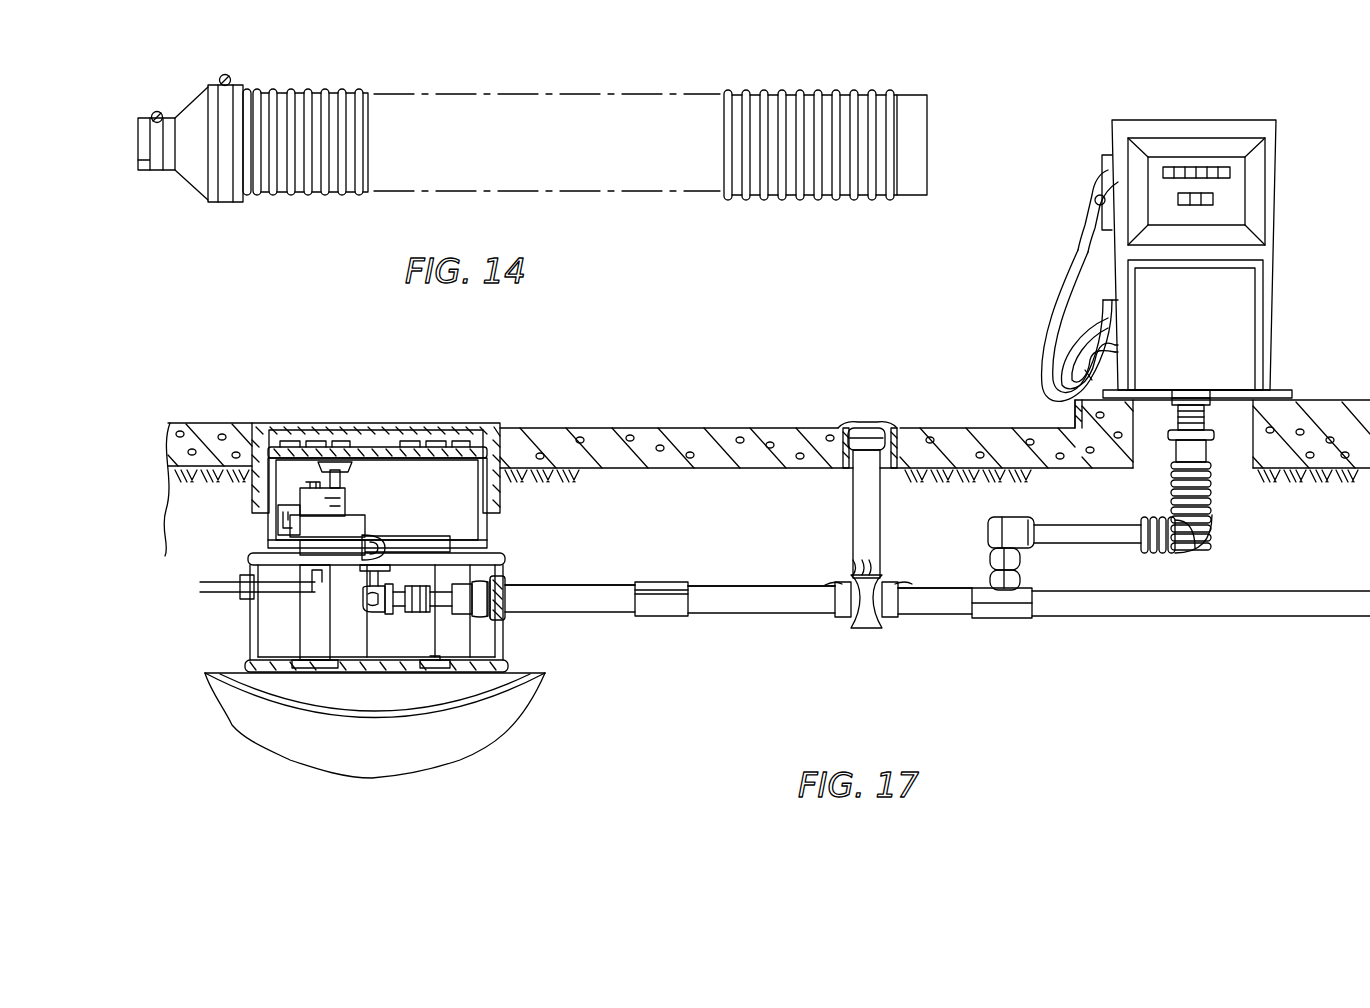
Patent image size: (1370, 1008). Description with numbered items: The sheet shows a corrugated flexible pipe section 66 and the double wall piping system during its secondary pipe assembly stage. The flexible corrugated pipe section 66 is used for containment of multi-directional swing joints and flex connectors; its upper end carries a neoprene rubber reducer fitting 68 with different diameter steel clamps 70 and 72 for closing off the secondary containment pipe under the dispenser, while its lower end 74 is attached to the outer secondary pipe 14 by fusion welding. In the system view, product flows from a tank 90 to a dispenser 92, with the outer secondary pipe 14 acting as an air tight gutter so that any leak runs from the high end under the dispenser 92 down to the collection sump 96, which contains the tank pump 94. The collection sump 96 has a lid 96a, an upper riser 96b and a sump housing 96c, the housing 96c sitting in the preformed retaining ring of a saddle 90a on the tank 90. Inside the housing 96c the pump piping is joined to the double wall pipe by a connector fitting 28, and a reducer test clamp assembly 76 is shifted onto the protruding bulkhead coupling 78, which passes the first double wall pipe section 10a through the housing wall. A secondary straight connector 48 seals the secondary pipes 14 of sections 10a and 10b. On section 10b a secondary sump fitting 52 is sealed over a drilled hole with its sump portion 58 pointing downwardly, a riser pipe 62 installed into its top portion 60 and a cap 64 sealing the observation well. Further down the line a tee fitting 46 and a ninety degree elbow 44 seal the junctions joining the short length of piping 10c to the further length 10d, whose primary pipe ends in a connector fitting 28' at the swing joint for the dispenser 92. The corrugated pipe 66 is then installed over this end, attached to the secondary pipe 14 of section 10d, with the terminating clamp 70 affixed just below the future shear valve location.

In FIG. 17, the first section of double wall pipe 10a is at (580, 608).
In FIG. 17, the double wall pipe section 10b is at (748, 612).
In FIG. 17, the short length of piping 10c is at (1018, 560).
In FIG. 17, the further length of piping 10d is at (1100, 535).
In FIG. 17, the outer secondary pipe 14 is at (605, 580).
In FIG. 17, the connector fitting 28 is at (425, 616).
In FIG. 17, the plastic pipe-to-metal pipe connector fitting 28' is at (1182, 374).
In FIG. 17, the 90° elbow 44 is at (1030, 520).
In FIG. 17, the tee fitting 46 is at (1005, 618).
In FIG. 17, the secondary straight connector 48 is at (682, 618).
In FIG. 17, the secondary sump fitting 52 is at (895, 574).
In FIG. 17, the sump portion 58 is at (868, 628).
In FIG. 17, the top portion 60 is at (840, 572).
In FIG. 17, the riser pipe 62 is at (860, 490).
In FIG. 17, the cap 64 is at (872, 428).
In FIG. 14, the flexible corrugated pipe section 66 is at (752, 207).
In FIG. 17, the flexible corrugated pipe section 66 is at (1215, 494).
In FIG. 14, the neoprene rubber reducer fitting 68 is at (192, 115).
In FIG. 14, the steel clamp 70 is at (147, 116).
In FIG. 17, the steel clamp 70 is at (1206, 428).
In FIG. 14, the steel clamp 72 is at (232, 78).
In FIG. 14, the lower end 74 is at (909, 118).
In FIG. 17, the test clamp assembly 76 is at (498, 648).
In FIG. 17, the bulkhead coupling 78 is at (505, 572).
In FIG. 17, the tank 90 is at (442, 722).
In FIG. 17, the saddle 90a is at (370, 695).
In FIG. 17, the dispenser 92 is at (1292, 285).
In FIG. 17, the tank pump 94 is at (375, 508).
In FIG. 17, the collection sump 96 is at (490, 528).
In FIG. 17, the lid 96a is at (378, 447).
In FIG. 17, the upper riser 96b is at (270, 525).
In FIG. 17, the sump housing 96c is at (250, 628).